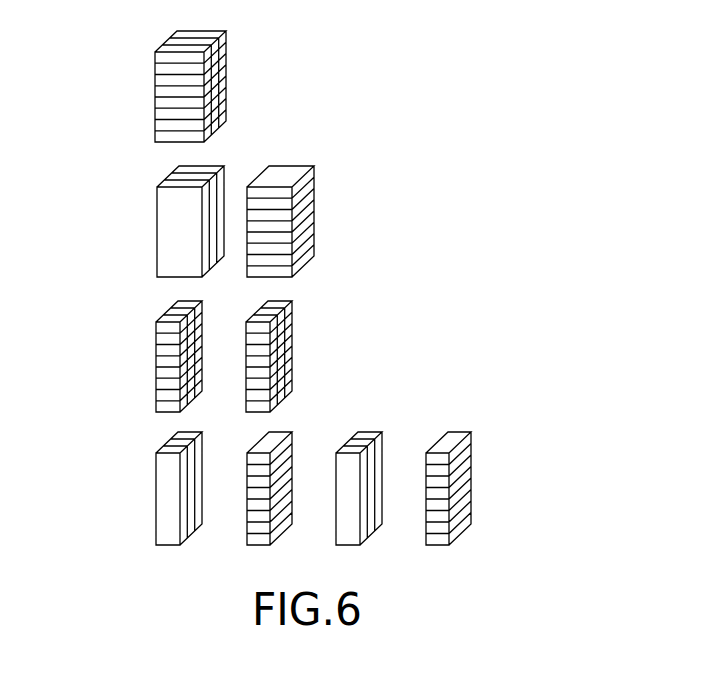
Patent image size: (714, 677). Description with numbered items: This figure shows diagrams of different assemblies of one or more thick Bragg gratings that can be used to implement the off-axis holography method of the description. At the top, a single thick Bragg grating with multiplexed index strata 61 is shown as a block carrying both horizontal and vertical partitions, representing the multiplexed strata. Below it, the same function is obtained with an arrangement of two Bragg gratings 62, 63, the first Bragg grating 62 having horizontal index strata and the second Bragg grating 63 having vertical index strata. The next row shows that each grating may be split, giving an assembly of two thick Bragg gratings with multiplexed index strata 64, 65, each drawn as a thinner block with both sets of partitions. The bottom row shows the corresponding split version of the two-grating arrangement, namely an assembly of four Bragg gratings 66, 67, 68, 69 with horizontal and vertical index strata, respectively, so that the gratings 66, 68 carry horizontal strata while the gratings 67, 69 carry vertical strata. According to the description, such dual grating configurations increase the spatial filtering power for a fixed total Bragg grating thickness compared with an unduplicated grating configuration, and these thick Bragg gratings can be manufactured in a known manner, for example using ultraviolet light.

The thick Bragg grating with multiplexed index strata 61 is at (148, 107).
The Bragg grating with horizontal index strata 62 is at (152, 232).
The Bragg grating with vertical index strata 63 is at (318, 220).
The thick Bragg grating with multiplexed index strata 64 is at (152, 348).
The thick Bragg grating with multiplexed index strata 65 is at (294, 352).
The Bragg grating with horizontal index strata 66 is at (148, 475).
The Bragg grating with vertical index strata 67 is at (294, 431).
The Bragg grating with horizontal index strata 68 is at (371, 432).
The Bragg grating with vertical index strata 69 is at (473, 491).